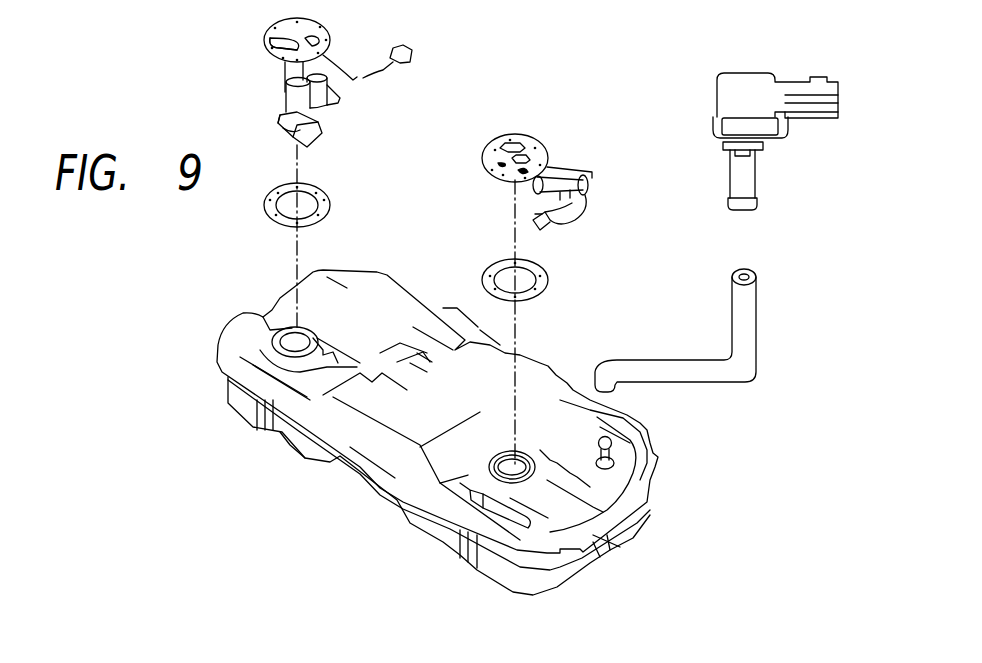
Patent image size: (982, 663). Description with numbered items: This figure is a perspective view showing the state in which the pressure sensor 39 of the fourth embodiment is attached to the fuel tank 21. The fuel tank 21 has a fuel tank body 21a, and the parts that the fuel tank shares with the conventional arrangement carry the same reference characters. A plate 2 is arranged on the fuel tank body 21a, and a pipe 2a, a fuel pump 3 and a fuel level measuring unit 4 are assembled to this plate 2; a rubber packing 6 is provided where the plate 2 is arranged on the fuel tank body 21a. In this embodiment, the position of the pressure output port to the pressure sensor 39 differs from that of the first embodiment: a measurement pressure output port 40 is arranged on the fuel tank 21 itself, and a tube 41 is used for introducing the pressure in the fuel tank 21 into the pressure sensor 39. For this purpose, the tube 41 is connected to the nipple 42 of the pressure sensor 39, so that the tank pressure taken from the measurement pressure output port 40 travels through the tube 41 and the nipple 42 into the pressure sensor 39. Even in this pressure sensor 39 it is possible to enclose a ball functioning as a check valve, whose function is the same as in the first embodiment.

The fuel tank 21 is at (445, 130).
The fuel tank body 21a is at (450, 542).
The plate 2 is at (323, 35).
The pipe 2a is at (285, 37).
The fuel pump 3 is at (290, 77).
The fuel level measuring unit 4 is at (323, 127).
The rubber packing 6 is at (548, 272).
The pressure sensor 39 is at (717, 98).
The measurement pressure output port 40 is at (620, 453).
The tube 41 is at (735, 330).
The nipple 42 is at (740, 177).